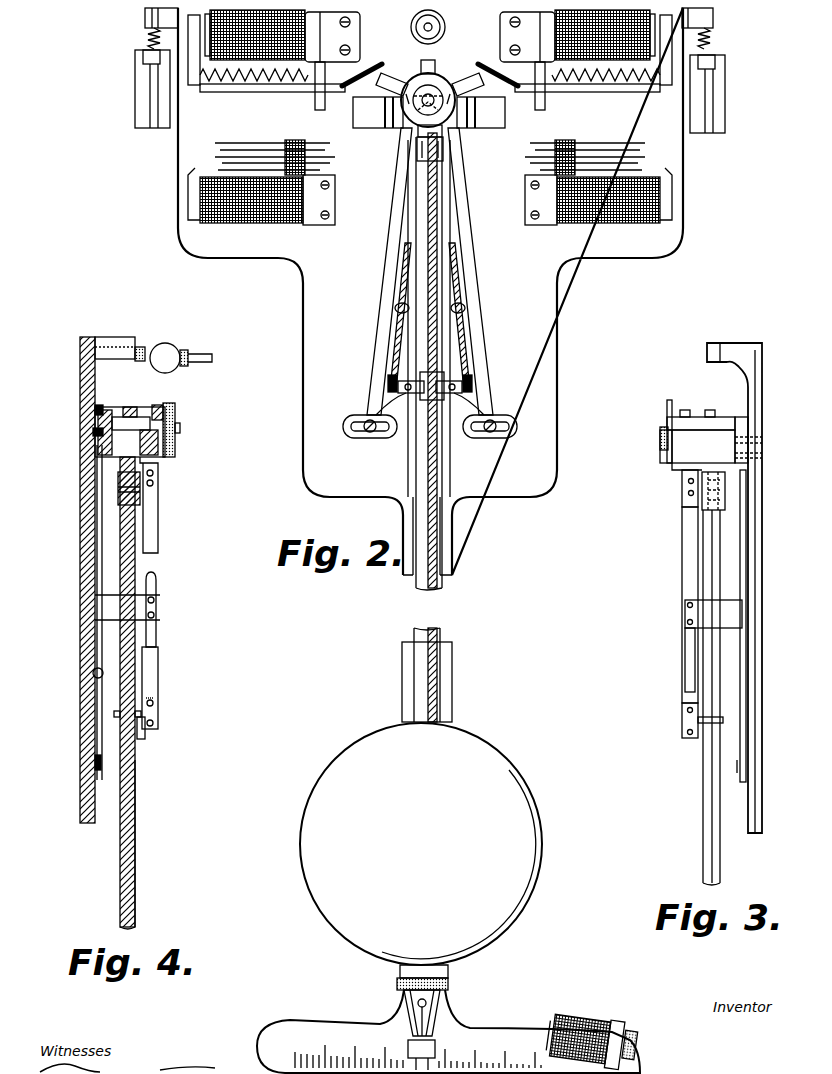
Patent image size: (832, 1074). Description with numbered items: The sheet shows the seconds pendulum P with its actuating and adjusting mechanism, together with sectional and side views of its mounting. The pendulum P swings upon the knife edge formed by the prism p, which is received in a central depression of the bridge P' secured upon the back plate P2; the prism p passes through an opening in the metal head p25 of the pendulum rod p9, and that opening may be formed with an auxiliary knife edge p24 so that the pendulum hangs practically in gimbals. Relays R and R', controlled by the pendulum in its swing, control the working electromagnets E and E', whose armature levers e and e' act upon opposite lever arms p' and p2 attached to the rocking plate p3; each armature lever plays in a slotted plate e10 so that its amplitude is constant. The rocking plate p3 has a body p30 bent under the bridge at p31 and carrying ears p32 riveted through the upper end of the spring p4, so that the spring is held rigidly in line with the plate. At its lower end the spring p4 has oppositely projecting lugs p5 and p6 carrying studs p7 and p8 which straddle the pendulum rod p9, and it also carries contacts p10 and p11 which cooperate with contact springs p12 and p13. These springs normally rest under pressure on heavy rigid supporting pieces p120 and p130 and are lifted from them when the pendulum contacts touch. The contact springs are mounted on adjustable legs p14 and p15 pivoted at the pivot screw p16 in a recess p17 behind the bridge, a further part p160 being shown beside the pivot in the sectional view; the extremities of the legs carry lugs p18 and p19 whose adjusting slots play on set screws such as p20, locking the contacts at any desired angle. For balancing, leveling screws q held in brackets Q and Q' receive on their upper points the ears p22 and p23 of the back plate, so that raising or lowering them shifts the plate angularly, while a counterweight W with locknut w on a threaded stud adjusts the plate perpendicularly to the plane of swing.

In FIG. 2, the ear or lug p22 is at (145, 14).
In FIG. 2, the ear or lug p23 is at (713, 18).
In FIG. 2, the leveling screw q is at (146, 40).
In FIG. 2, the bracket Q is at (135, 89).
In FIG. 2, the bracket Q' is at (724, 94).
In FIG. 2, the working electromagnet E is at (274, 65).
In FIG. 2, the working electromagnet E' is at (586, 65).
In FIG. 2, the armature lever e is at (362, 67).
In FIG. 2, the armature lever e' is at (498, 68).
In FIG. 2, the slotted plate e10 is at (534, 104).
In FIG. 2, the counterweight W is at (452, 28).
In FIG. 2, the rocking plate p3 is at (420, 116).
In FIG. 2, the lever arm p' is at (393, 79).
In FIG. 2, the lever arm p2 is at (462, 82).
In FIG. 2, the bridge P' is at (429, 132).
In FIG. 2, the ears p32 is at (422, 152).
In FIG. 3, the ears p32 is at (684, 492).
In FIG. 2, the spring p4 is at (426, 196).
In FIG. 4, the spring p4 is at (152, 508).
In FIG. 2, the back plate P2 is at (441, 271).
In FIG. 2, the adjustable leg p14 is at (388, 278).
In FIG. 2, the adjustable leg p15 is at (467, 276).
In FIG. 4, the adjustable leg p15 is at (90, 685).
In FIG. 2, the supporting piece p120 is at (395, 308).
In FIG. 2, the supporting piece p130 is at (465, 310).
In FIG. 2, the contact spring p12 is at (390, 380).
In FIG. 2, the contact spring p13 is at (472, 382).
In FIG. 4, the contact spring p13 is at (157, 640).
In FIG. 2, the contact p10 is at (398, 387).
In FIG. 2, the contact p11 is at (462, 390).
In FIG. 2, the stud p7 is at (405, 395).
In FIG. 2, the stud p8 is at (487, 398).
In FIG. 4, the stud p8 is at (148, 735).
In FIG. 2, the lug p18 is at (358, 427).
In FIG. 2, the lug p19 is at (500, 440).
In FIG. 2, the set screw p20 is at (372, 440).
In FIG. 2, the lug p5 is at (410, 400).
In FIG. 2, the lug p6 is at (448, 400).
In FIG. 2, the pendulum rod p9 is at (428, 504).
In FIG. 4, the pendulum rod p9 is at (137, 775).
In FIG. 2, the pendulum P is at (421, 796).
In FIG. 4, the pendulum P is at (149, 433).
In FIG. 2, the auxiliary knife edge p24 is at (512, 1036).
In FIG. 4, the auxiliary knife edge p24 is at (131, 408).
In FIG. 2, the relay R is at (261, 197).
In FIG. 2, the relay R' is at (598, 197).
In FIG. 4, the locknut w is at (175, 343).
In FIG. 4, the recess p17 is at (98, 407).
In FIG. 4, the pivot screw p16 is at (96, 434).
In FIG. 4, the side pin p160 is at (180, 427).
In FIG. 4, the metal head p25 is at (120, 462).
In FIG. 4, the knife edge / prism p is at (164, 688).
In FIG. 3, the body p30 is at (666, 460).
In FIG. 3, the bend p31 is at (684, 476).